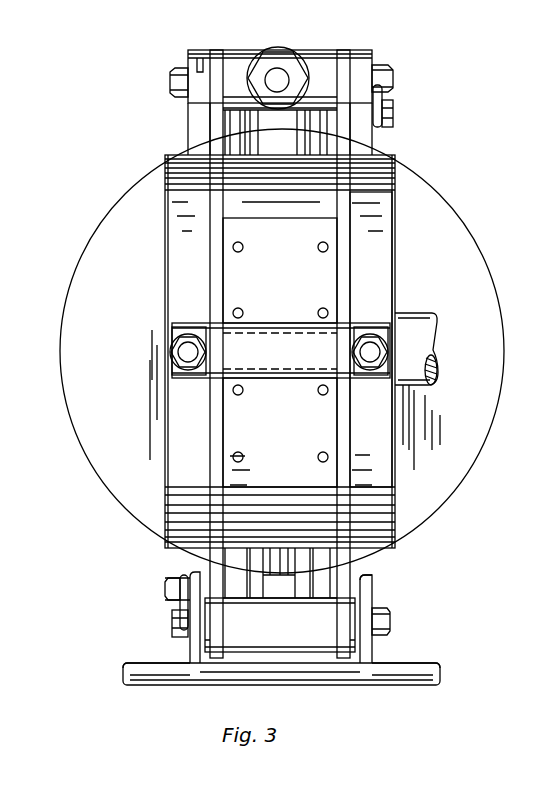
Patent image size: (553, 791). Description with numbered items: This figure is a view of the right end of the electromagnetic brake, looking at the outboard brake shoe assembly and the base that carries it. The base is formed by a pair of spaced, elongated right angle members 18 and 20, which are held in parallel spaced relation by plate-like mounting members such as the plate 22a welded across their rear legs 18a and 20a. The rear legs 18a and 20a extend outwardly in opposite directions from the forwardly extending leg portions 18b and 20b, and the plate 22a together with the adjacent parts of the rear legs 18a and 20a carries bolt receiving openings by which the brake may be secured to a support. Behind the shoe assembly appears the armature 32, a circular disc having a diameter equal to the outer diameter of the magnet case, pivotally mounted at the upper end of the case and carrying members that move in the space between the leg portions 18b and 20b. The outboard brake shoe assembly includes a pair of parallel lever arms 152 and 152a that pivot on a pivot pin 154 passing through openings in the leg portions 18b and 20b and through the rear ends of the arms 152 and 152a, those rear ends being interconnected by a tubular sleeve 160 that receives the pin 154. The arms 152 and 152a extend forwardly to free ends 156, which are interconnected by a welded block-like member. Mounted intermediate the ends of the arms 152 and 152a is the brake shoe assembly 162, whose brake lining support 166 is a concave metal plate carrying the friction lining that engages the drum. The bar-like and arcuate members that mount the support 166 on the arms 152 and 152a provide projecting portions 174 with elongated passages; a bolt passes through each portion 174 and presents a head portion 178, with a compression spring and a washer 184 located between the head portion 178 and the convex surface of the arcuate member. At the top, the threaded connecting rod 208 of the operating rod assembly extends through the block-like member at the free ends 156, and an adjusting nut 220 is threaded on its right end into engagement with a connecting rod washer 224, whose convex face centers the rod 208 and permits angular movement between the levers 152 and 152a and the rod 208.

The right angle member 18 is at (375, 648).
The rear leg 18a is at (423, 667).
The forwardly extending leg portion 18b is at (372, 578).
The right angle member 20 is at (137, 665).
The rear leg 20a is at (135, 663).
The forwardly extending leg portion 20b is at (200, 570).
The plate-like mounting member 22a is at (172, 680).
The armature 32 is at (112, 218).
The lever arm 152 is at (222, 283).
The lever arm 152a is at (342, 278).
The pivot pin 154 is at (383, 610).
The free end 156 is at (196, 60).
The tubular sleeve 160 is at (300, 630).
The brake shoe assembly 162 is at (245, 420).
The brake lining support 166 is at (245, 259).
The projecting portion 174 is at (187, 323).
The head portion 178 is at (188, 355).
The washer 184 is at (172, 347).
The connecting rod 208 is at (277, 80).
The adjusting nut 220 is at (258, 72).
The connecting rod washer 224 is at (303, 53).